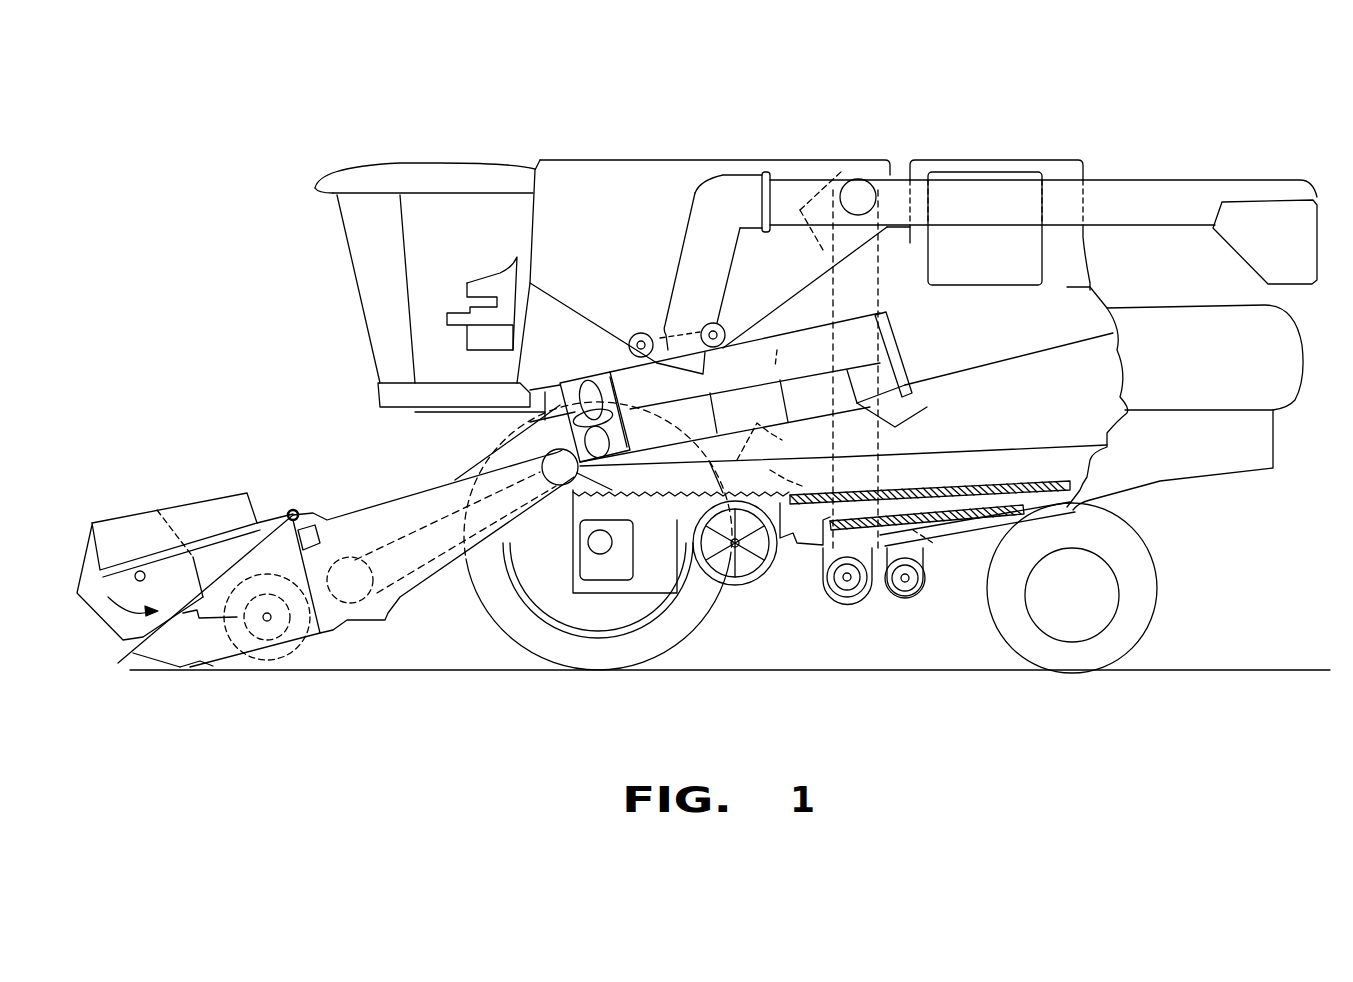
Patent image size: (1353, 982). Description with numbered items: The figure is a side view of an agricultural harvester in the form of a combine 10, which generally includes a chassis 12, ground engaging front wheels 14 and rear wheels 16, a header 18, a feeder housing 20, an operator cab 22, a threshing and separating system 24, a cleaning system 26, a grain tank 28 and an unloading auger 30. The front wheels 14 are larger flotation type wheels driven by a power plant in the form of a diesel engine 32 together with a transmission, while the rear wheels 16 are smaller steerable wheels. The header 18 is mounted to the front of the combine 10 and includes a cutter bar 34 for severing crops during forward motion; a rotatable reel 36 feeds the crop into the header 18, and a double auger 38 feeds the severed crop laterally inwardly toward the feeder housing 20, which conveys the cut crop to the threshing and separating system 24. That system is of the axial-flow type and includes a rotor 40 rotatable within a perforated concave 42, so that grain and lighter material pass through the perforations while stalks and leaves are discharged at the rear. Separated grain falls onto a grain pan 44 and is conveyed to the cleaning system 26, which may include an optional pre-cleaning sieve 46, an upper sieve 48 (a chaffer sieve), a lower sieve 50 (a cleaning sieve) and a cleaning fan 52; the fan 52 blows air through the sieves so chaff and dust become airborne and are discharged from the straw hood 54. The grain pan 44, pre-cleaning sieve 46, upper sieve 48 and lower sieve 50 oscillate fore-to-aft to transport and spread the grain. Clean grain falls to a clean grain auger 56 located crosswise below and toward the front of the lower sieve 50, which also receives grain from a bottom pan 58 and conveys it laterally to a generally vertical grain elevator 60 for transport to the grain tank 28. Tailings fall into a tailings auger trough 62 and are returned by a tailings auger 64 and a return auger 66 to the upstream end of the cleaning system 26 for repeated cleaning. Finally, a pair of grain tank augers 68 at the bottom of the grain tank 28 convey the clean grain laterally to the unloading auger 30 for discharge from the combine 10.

The combine 10 is at (418, 145).
The chassis 12 is at (1093, 503).
The front wheels 14 is at (500, 627).
The rear wheels 16 is at (1152, 610).
The header 18 is at (178, 493).
The feeder housing 20 is at (393, 497).
The operator cab 22 is at (347, 258).
The threshing and separating system 24 is at (503, 430).
The cleaning system 26 is at (808, 592).
The grain tank 28 is at (594, 163).
The unloading auger 30 is at (1168, 190).
The diesel engine 32 is at (975, 172).
The cutter bar 34 is at (210, 663).
The rotatable reel 36 is at (77, 563).
The double auger 38 is at (273, 653).
The rotor 40 is at (583, 383).
The perforated concave 42 is at (777, 363).
The grain pan 44 is at (567, 523).
The pre-cleaning sieve 46 is at (880, 490).
The upper sieve 48 is at (987, 487).
The lower sieve 50 is at (957, 530).
The cleaning fan 52 is at (730, 590).
The straw hood 54 is at (1285, 345).
The clean grain auger 56 is at (847, 600).
The bottom pan 58 is at (1005, 520).
The grain elevator 60 is at (880, 292).
The tailings auger trough 62 is at (997, 530).
The tailings auger 64 is at (897, 607).
The return auger 66 is at (815, 477).
The grain tank augers 68 is at (639, 333).